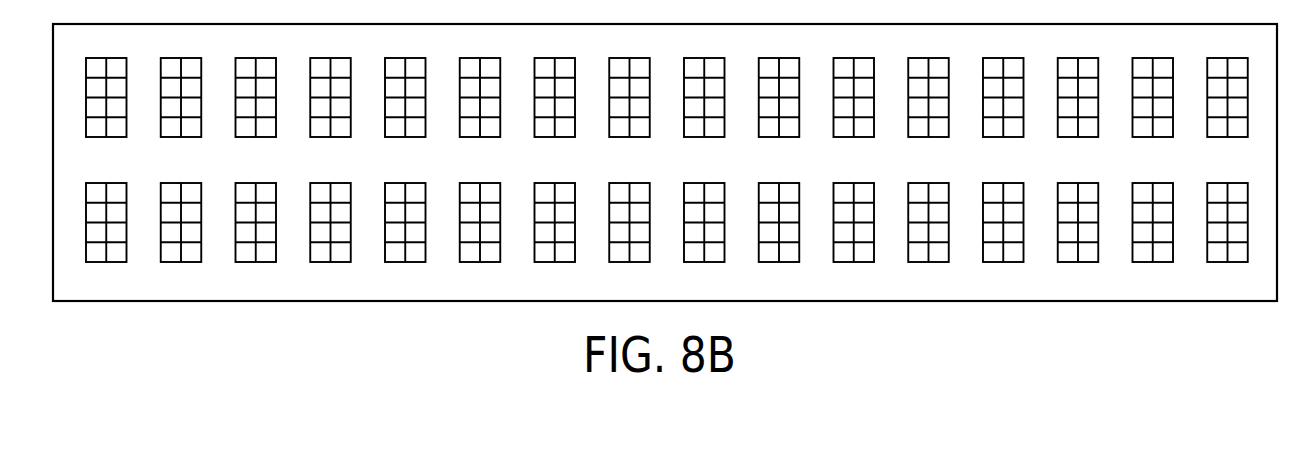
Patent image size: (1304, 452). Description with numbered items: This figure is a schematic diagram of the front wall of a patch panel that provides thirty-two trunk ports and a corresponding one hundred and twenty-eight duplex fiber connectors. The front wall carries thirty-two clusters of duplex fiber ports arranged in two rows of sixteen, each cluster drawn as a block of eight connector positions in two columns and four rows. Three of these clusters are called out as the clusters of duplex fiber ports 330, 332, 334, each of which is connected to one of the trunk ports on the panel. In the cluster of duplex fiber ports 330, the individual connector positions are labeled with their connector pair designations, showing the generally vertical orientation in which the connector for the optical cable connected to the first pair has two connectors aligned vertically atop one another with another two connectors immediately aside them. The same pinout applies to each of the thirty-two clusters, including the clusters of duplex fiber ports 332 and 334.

The cluster of duplex fiber ports 330 is at (1232, 268).
The cluster of duplex fiber ports 332 is at (1152, 268).
The cluster of duplex fiber ports 334 is at (1077, 268).